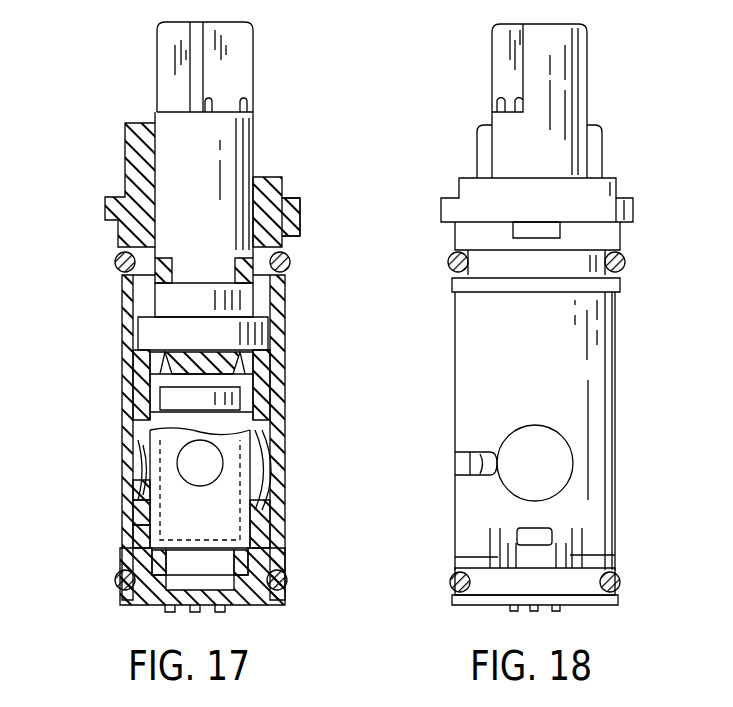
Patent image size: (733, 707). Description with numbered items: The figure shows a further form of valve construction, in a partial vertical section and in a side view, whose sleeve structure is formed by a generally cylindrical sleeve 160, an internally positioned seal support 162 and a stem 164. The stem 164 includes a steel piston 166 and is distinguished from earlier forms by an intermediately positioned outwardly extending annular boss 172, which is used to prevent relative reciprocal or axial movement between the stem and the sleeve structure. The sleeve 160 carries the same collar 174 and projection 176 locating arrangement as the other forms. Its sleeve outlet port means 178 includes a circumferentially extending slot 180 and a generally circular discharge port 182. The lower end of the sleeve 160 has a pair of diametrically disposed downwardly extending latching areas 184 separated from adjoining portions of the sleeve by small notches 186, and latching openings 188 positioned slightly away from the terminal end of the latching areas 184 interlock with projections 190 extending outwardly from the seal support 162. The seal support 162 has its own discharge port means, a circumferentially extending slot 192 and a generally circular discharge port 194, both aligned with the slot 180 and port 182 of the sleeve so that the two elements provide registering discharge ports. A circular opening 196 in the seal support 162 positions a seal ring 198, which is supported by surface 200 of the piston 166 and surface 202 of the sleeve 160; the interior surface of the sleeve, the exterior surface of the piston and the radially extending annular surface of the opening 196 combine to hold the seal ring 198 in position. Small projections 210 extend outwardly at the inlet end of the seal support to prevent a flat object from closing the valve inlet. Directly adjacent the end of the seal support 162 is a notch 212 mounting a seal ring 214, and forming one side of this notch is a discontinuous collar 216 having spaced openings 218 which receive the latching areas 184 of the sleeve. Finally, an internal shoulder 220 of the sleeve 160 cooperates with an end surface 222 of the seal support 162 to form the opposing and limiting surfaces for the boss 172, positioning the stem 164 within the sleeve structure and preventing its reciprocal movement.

In FIG. 17, the sleeve 160 is at (285, 373).
In FIG. 18, the sleeve 160 is at (615, 340).
In FIG. 17, the seal support 162 is at (262, 406).
In FIG. 17, the stem 164 is at (252, 70).
In FIG. 18, the stem 164 is at (585, 65).
In FIG. 18, the steel piston 166 is at (553, 469).
In FIG. 17, the annular boss 172 is at (150, 332).
In FIG. 17, the collar 174 is at (105, 206).
In FIG. 18, the collar 174 is at (633, 206).
In FIG. 17, the projection 176 is at (300, 229).
In FIG. 18, the projection 176 is at (550, 229).
In FIG. 17, the sleeve outlet port means 178 is at (303, 451).
In FIG. 18, the circumferentially extending slot 180 is at (460, 476).
In FIG. 17, the discharge port 182 is at (290, 428).
In FIG. 18, the discharge port 182 is at (556, 412).
In FIG. 17, the latching areas 184 is at (120, 556).
In FIG. 18, the latching areas 184 is at (528, 566).
In FIG. 18, the notches 186 is at (578, 539).
In FIG. 17, the latching openings 188 is at (280, 531).
In FIG. 18, the latching openings 188 is at (540, 532).
In FIG. 17, the projections 190 is at (275, 546).
In FIG. 18, the projections 190 is at (540, 540).
In FIG. 18, the circumferentially extending slot 192 is at (458, 454).
In FIG. 17, the discharge port 194 is at (265, 500).
In FIG. 17, the circular opening 196 is at (125, 505).
In FIG. 17, the seal ring 198 is at (138, 481).
In FIG. 17, the surface of piston 200 is at (150, 463).
In FIG. 17, the surface of sleeve 202 is at (140, 446).
In FIG. 17, the small projections 210 is at (196, 612).
In FIG. 17, the notch 212 is at (118, 586).
In FIG. 18, the notch 212 is at (452, 586).
In FIG. 17, the seal ring 214 is at (287, 582).
In FIG. 18, the seal ring 214 is at (618, 584).
In FIG. 18, the discontinuous collar 216 is at (455, 560).
In FIG. 18, the spaced openings 218 is at (582, 556).
In FIG. 17, the internal shoulder 220 is at (268, 322).
In FIG. 17, the end surface 222 is at (125, 353).